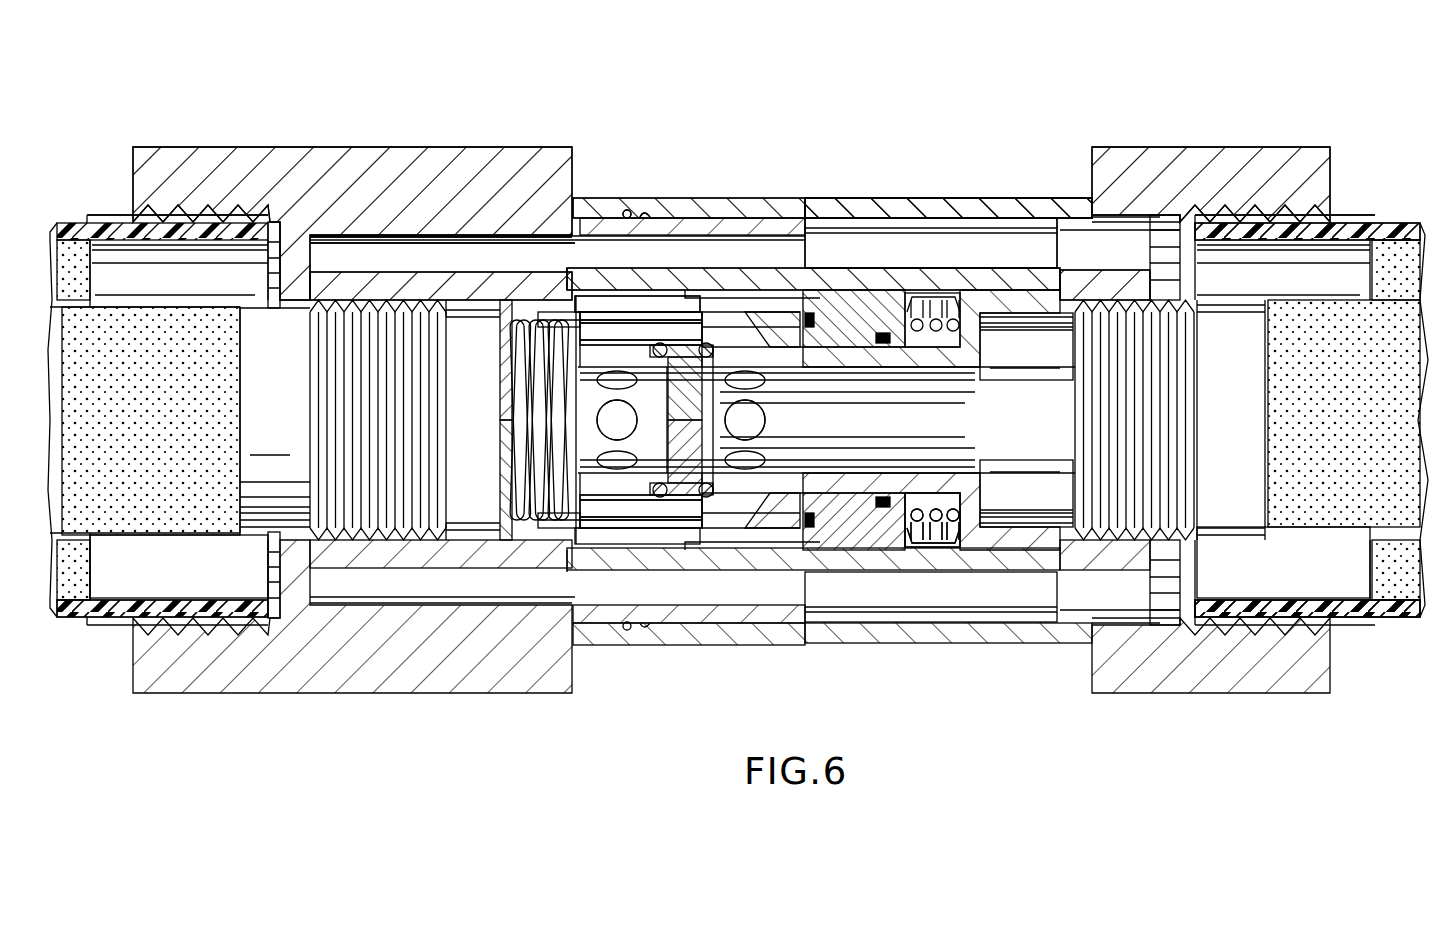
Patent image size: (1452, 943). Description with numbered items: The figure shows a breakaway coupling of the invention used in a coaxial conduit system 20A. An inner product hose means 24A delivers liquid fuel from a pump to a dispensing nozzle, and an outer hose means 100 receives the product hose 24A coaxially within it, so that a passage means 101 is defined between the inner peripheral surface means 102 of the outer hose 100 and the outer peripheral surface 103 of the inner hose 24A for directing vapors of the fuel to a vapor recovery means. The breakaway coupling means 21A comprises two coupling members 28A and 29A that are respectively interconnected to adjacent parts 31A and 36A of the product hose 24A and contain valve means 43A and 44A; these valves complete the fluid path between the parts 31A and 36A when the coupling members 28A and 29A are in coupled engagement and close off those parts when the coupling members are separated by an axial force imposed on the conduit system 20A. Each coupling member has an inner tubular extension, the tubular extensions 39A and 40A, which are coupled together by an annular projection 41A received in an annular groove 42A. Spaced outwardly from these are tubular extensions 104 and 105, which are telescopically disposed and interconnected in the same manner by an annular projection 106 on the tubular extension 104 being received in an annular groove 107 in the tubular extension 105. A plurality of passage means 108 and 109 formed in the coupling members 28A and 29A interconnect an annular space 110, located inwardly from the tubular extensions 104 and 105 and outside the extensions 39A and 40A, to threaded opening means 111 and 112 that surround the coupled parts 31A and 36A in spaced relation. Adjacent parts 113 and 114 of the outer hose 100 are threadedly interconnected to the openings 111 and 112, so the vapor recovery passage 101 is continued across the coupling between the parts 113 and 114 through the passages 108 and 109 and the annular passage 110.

The conduit system 20A is at (948, 119).
The breakaway coupling means 21A is at (948, 145).
The coupling member 28A is at (450, 147).
The coupling member 29A is at (1205, 147).
The passage means 108 is at (385, 245).
The annular groove 107 is at (630, 212).
The annular projection 106 is at (645, 217).
The tubular extension 104 is at (703, 217).
The tubular extension 105 is at (856, 197).
The annular space 110 is at (940, 197).
The passage means 109 is at (1072, 235).
The passage means 101 is at (1266, 262).
The outer hose means 100 is at (1407, 228).
The inner peripheral surface means 102 is at (1388, 222).
The outer peripheral surface 103 is at (1385, 312).
The threaded opening means 111 is at (133, 212).
The part of product hose 31A is at (162, 330).
The annular groove 42A is at (618, 305).
The annular projection 41A is at (760, 305).
The tubular extension 39A is at (790, 290).
The tubular extension 40A is at (955, 285).
The inner product hose means 24A is at (1377, 425).
The part of product hose 36A is at (1330, 505).
The threaded opening means 112 is at (1268, 623).
The part of outer hose 114 is at (1353, 623).
The part of outer hose 113 is at (110, 630).
The valve means 43A is at (650, 520).
The valve means 44A is at (931, 535).